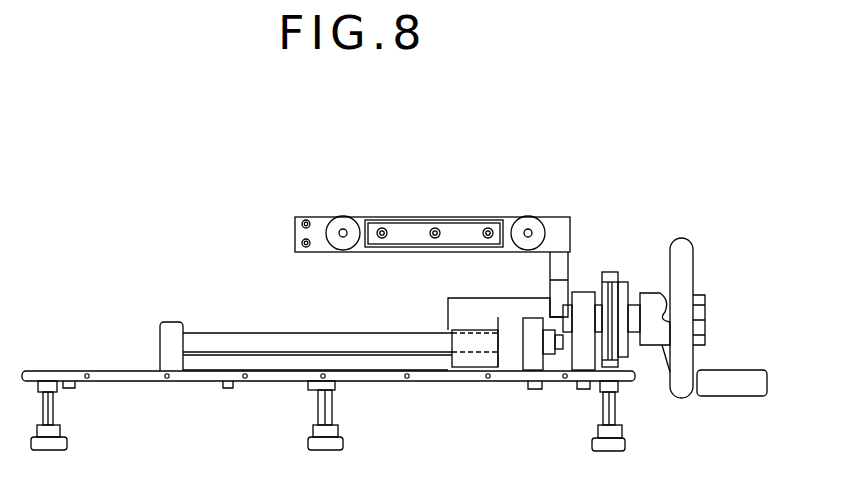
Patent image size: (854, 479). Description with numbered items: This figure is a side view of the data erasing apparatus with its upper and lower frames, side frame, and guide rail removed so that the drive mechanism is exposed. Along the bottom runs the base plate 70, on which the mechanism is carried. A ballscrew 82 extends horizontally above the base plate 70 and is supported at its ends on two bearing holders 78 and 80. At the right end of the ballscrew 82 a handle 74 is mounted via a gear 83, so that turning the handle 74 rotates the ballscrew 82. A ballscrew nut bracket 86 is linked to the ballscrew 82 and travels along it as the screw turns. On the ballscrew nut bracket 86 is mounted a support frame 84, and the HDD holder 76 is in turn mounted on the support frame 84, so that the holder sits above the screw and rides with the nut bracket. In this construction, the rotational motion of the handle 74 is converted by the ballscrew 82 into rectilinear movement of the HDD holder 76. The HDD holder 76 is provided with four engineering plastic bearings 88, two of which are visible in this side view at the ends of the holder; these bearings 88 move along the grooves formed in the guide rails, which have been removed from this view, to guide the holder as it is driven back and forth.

The base plate 70 is at (53, 370).
The handle 74 is at (672, 376).
The HDD holder 76 is at (421, 232).
The bearing holder 78 is at (175, 332).
The bearing holder 80 is at (530, 360).
The ballscrew 82 is at (231, 338).
The gear 83 is at (608, 295).
The support frame 84 is at (565, 268).
The ballscrew nut bracket 86 is at (482, 360).
The engineering plastic bearings 88 is at (341, 218).